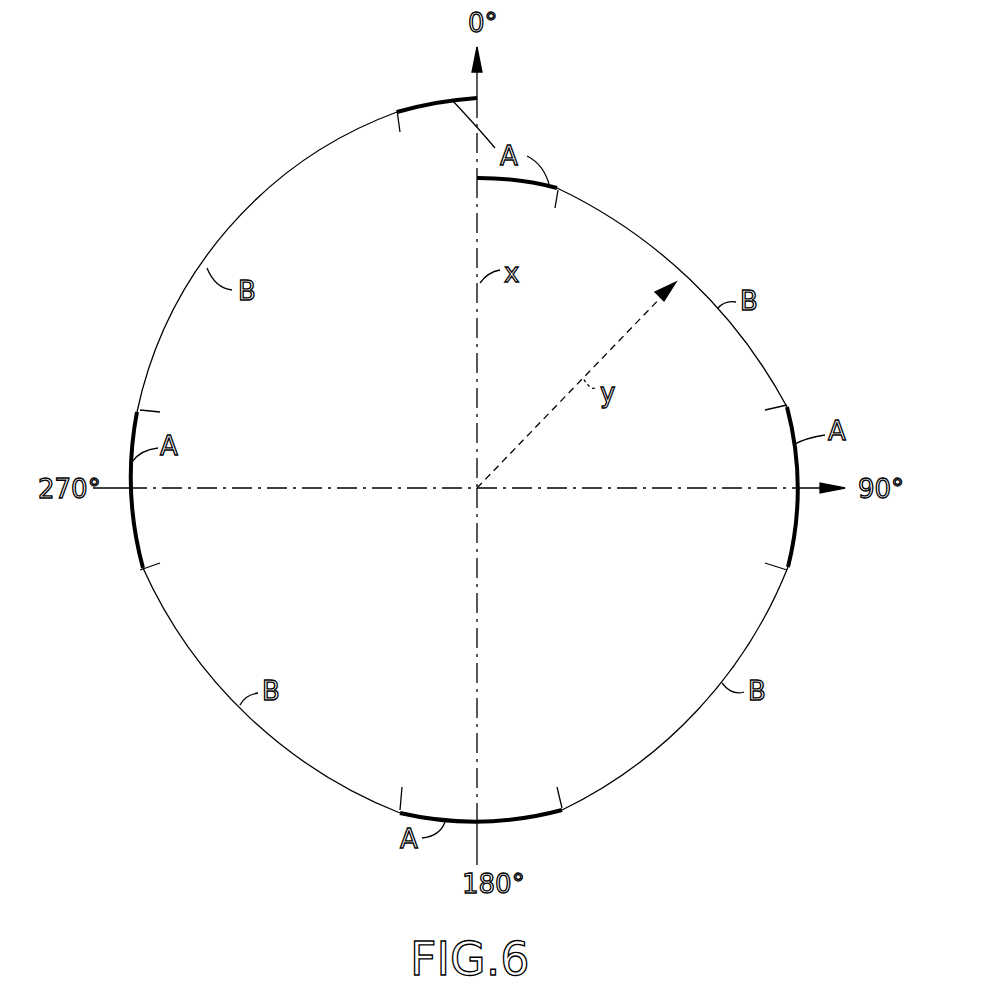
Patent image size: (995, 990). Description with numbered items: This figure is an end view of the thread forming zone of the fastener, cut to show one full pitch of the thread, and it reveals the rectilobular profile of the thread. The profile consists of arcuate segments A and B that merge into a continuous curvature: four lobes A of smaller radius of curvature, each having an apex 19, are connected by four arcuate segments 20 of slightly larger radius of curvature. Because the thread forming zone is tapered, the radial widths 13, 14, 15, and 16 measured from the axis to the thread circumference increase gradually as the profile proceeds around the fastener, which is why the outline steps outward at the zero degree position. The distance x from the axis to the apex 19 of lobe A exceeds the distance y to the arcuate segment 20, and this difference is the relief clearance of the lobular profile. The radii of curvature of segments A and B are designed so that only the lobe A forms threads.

The radial width 13 is at (706, 488).
The radial width 14 is at (478, 665).
The radial width 15 is at (284, 488).
The radial width 16 is at (479, 357).
The apex of lobe A 19 is at (134, 540).
The arcuate segment B 20 is at (308, 768).